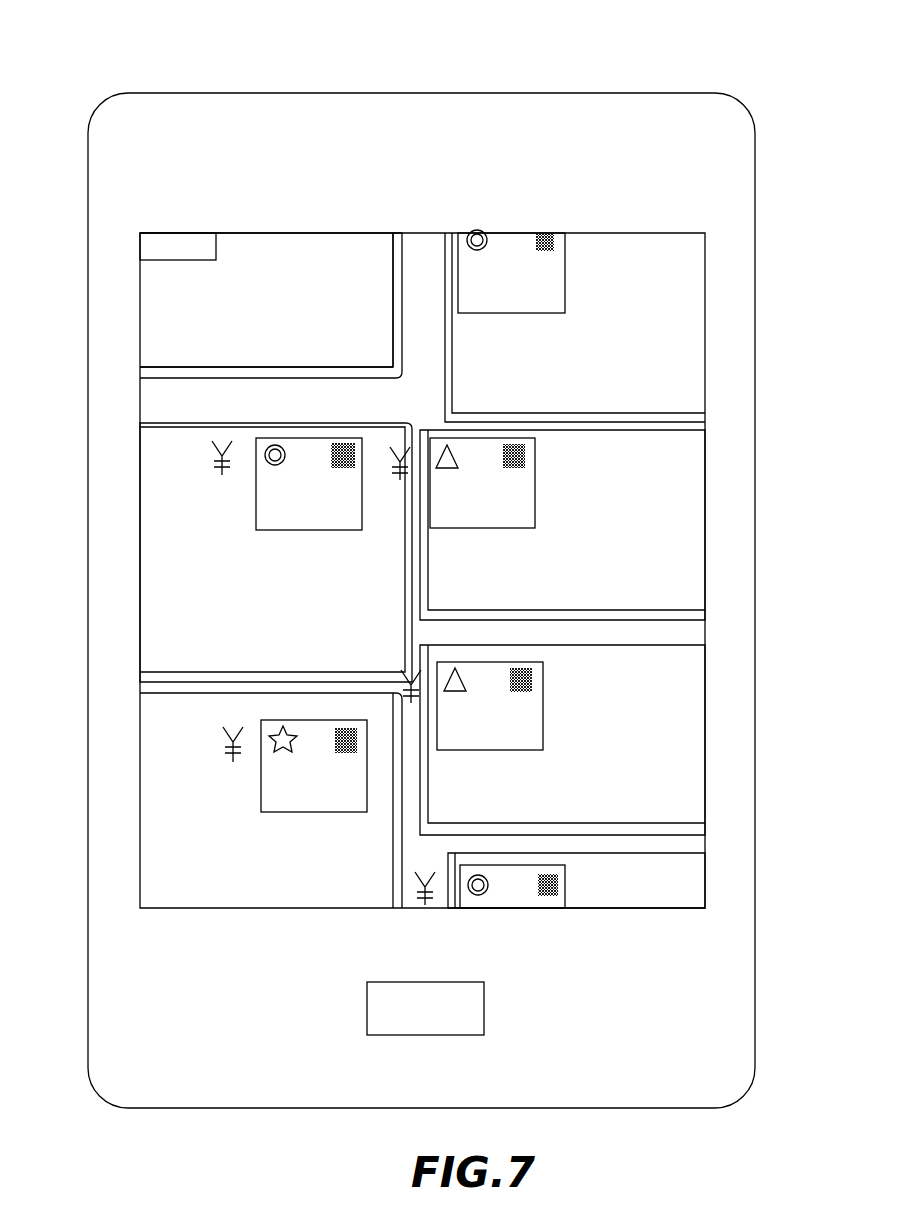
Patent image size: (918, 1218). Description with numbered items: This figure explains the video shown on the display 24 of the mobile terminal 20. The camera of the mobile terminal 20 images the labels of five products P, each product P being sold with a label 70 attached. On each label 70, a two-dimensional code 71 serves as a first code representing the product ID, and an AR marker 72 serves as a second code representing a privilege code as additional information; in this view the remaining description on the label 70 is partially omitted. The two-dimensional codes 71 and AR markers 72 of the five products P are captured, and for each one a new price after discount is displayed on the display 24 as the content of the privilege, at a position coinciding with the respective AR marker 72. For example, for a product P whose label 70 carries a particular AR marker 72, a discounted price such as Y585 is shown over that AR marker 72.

The mobile terminal 20 is at (408, 93).
The display 24 is at (705, 272).
The product P is at (190, 615).
The label 70 is at (256, 523).
The two-dimensional code 71 is at (340, 480).
The AR marker 72 is at (282, 480).